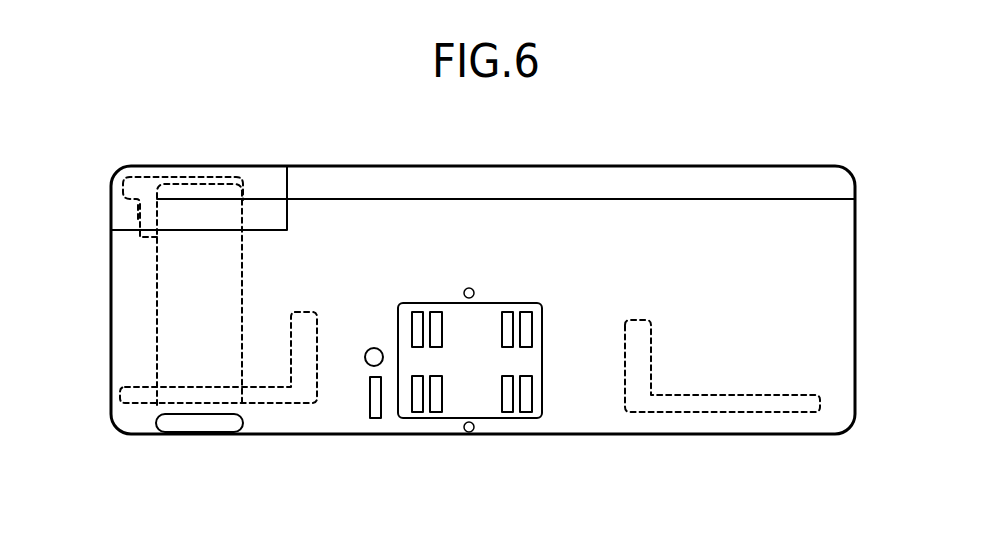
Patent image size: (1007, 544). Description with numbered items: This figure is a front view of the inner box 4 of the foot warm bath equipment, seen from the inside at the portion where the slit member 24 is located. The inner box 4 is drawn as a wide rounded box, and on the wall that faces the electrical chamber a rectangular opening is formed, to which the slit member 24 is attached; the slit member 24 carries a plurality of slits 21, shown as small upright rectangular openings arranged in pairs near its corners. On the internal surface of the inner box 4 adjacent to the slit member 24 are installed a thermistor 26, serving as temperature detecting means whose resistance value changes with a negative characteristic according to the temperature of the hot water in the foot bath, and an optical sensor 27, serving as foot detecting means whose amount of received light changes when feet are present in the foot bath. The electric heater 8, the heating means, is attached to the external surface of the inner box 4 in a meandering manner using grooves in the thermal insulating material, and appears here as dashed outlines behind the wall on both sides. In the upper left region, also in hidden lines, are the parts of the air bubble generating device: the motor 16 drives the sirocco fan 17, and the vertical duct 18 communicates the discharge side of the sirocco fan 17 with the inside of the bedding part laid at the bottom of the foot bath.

The inner box 4 is at (835, 244).
The electric heater 8 is at (133, 404).
The motor 16 is at (138, 215).
The sirocco fan 17 is at (143, 176).
The vertical duct 18 is at (155, 287).
The slits 21 is at (417, 312).
The slit member 24 is at (493, 303).
The thermistor 26 is at (370, 398).
The optical sensor 27 is at (367, 350).